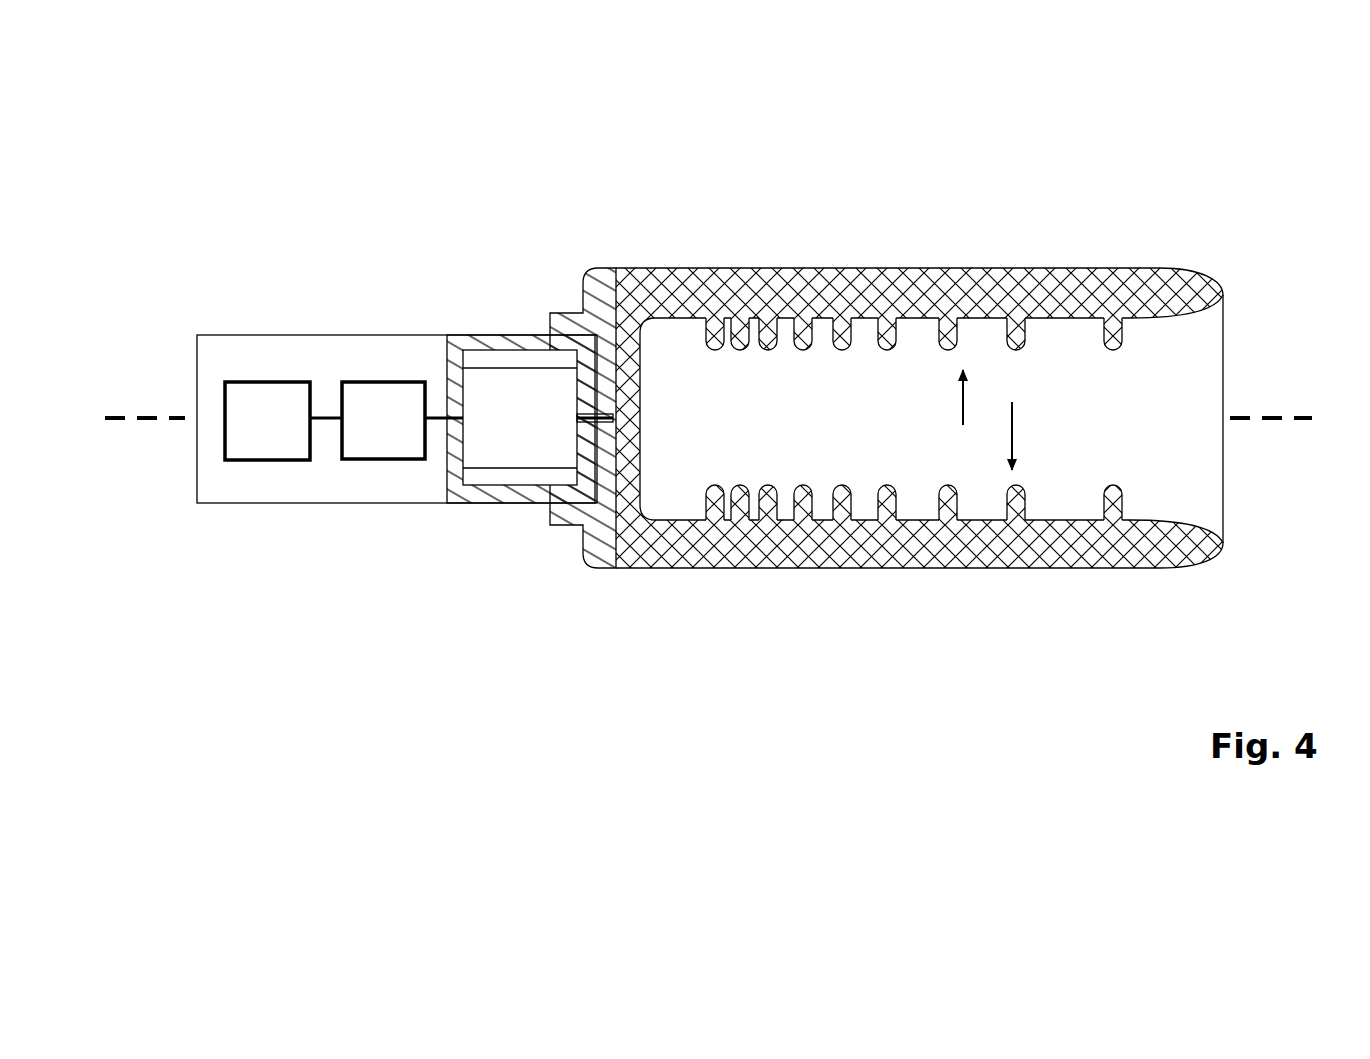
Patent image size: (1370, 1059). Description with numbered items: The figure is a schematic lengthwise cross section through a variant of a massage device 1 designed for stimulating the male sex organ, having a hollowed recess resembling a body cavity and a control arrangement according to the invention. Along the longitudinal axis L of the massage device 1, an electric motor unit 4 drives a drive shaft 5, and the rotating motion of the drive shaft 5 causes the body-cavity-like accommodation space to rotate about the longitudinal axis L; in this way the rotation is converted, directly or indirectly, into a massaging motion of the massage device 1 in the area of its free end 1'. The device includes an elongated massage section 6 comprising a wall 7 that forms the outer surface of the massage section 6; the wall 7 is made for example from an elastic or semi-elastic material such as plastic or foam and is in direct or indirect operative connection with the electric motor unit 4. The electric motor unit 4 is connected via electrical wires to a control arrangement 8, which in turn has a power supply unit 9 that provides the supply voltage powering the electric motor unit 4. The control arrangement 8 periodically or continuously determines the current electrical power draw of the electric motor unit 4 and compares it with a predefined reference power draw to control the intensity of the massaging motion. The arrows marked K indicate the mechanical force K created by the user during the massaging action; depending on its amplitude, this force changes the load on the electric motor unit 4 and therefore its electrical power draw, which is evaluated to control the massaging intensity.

The massage device 1 is at (1042, 98).
The free end 1' is at (886, 420).
The electric motor unit 4 is at (482, 370).
The drive shaft 5 is at (597, 412).
The massage section 6 is at (848, 375).
The wall 7 is at (947, 300).
The control arrangement 8 is at (386, 420).
The power supply unit 9 is at (267, 421).
The mechanical force K is at (987, 420).
The longitudinal axis L is at (716, 396).